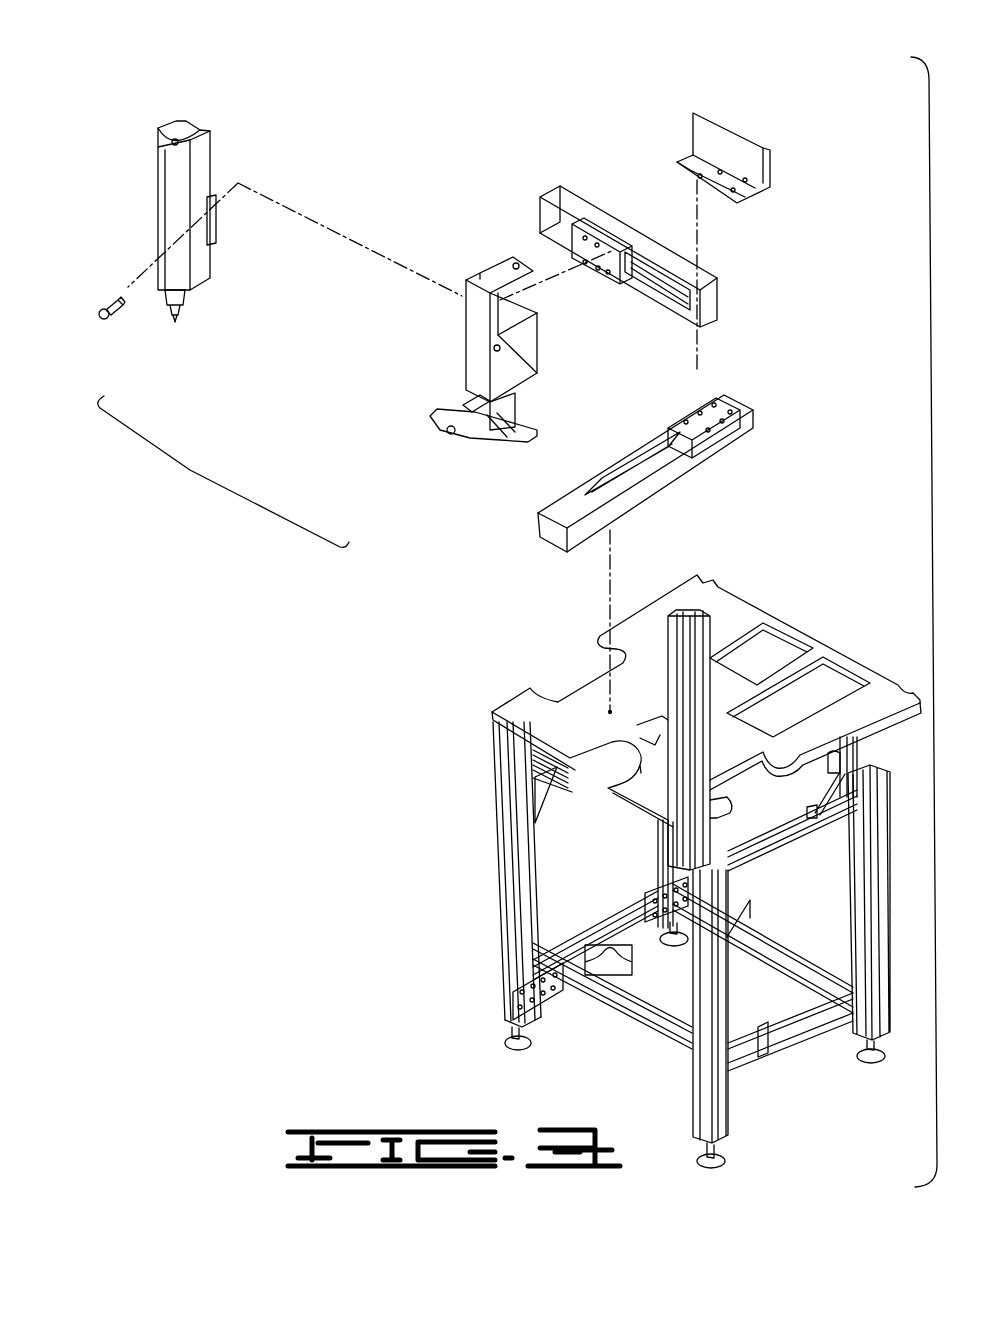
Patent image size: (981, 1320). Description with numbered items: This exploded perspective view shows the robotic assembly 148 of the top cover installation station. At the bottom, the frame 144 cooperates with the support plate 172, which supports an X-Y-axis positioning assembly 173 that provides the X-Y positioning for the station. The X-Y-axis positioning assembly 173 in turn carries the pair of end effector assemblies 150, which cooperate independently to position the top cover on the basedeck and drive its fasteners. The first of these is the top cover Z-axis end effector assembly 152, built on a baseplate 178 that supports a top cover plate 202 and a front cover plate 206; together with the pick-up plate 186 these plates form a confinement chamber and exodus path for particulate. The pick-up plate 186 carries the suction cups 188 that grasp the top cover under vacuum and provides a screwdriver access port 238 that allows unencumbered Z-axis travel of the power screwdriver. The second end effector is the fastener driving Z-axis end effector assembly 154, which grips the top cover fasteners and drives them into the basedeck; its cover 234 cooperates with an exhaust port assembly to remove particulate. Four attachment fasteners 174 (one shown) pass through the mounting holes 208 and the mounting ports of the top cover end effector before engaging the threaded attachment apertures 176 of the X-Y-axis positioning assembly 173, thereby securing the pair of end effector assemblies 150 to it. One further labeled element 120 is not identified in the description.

The robotic assembly 148 is at (404, 106).
The cover 234 is at (203, 193).
The mounting holes 208 is at (218, 228).
The dispensing nozzle 120 is at (176, 298).
The attachment fasteners 174 is at (110, 305).
The fastener driving Z-axis end effector assembly 154 is at (163, 311).
The pair of end effector assemblies 150 is at (190, 470).
The top cover plate 202 is at (501, 272).
The front cover plate 206 is at (472, 352).
The baseplate 178 is at (520, 360).
The threaded attachment apertures 176 is at (606, 278).
The X-Y-axis positioning assembly 173 is at (753, 205).
The top cover Z-axis end effector assembly 152 is at (413, 442).
The suction cups 188 is at (452, 432).
The screwdriver access port 238 is at (472, 415).
The pick-up plate 186 is at (505, 450).
The support plate 172 is at (538, 717).
The frame 144 is at (493, 887).